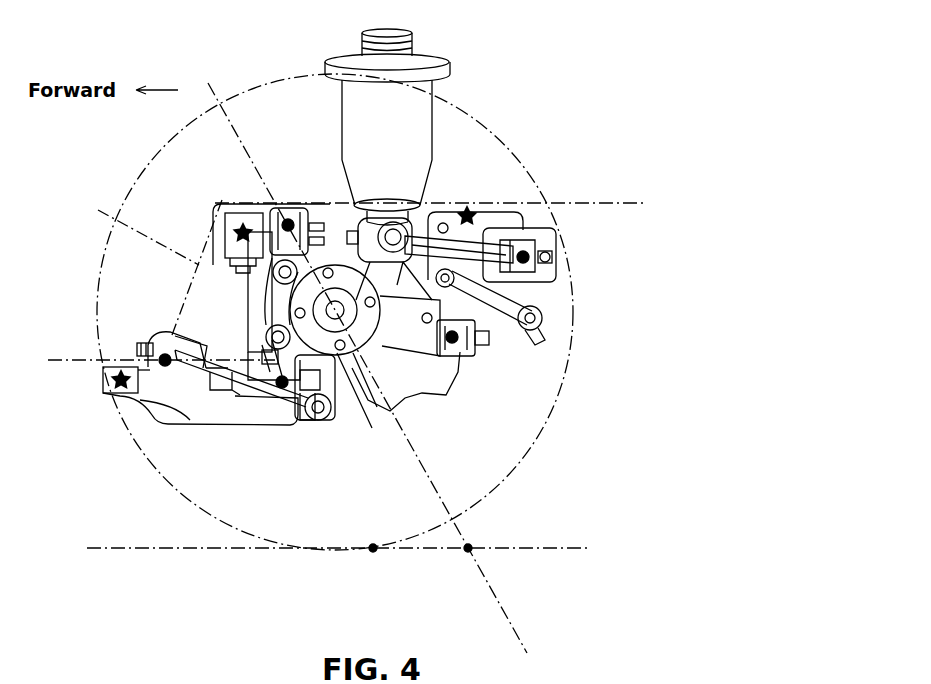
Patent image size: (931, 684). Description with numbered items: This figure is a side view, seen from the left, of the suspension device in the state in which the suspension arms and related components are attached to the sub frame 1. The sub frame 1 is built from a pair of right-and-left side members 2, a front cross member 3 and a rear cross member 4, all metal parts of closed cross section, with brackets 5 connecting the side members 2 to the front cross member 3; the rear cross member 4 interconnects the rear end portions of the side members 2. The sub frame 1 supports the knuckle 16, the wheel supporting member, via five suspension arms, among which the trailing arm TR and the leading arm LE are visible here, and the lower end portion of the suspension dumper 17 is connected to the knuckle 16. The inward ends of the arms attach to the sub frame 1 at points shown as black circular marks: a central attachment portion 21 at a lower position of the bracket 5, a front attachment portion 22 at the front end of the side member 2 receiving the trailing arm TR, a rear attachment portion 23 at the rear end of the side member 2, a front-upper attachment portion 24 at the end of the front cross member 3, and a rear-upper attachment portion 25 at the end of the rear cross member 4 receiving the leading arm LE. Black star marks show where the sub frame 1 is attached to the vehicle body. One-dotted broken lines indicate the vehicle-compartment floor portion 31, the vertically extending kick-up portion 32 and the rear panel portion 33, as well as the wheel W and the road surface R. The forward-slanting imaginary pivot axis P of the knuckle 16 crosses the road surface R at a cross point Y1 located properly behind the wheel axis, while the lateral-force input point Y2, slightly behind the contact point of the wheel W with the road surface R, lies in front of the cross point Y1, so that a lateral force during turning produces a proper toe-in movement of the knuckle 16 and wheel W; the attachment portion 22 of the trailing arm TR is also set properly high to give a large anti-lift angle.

The sub frame 1 is at (556, 72).
The side member 2 is at (193, 424).
The front cross member 3 is at (230, 244).
The rear cross member 4 is at (500, 215).
The bracket 5 is at (258, 305).
The knuckle 16 is at (327, 345).
The suspension dumper 17 is at (425, 112).
The central attachment portion 21 is at (282, 389).
The front attachment portion 22 is at (152, 345).
The rear attachment portion 23 is at (452, 344).
The front-upper attachment portion 24 is at (288, 219).
The rear-upper attachment portion 25 is at (543, 230).
The vehicle-compartment floor portion 31 is at (62, 358).
The kick-up portion 32 is at (145, 265).
The rear panel portion 33 is at (613, 203).
The leading arm LE is at (447, 205).
The trailing arm TR is at (248, 422).
The wheel W is at (562, 383).
The road surface R is at (117, 548).
The cross point Y1 is at (468, 548).
The lateral-force input point Y2 is at (373, 552).
The imaginary pivot axis P is at (503, 612).